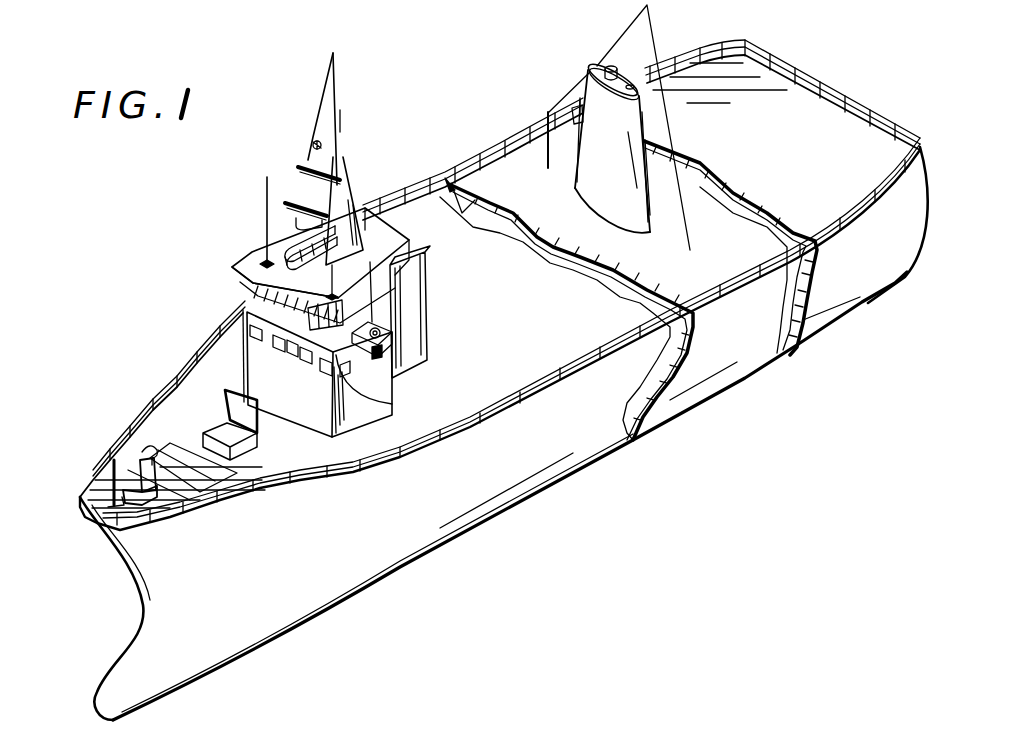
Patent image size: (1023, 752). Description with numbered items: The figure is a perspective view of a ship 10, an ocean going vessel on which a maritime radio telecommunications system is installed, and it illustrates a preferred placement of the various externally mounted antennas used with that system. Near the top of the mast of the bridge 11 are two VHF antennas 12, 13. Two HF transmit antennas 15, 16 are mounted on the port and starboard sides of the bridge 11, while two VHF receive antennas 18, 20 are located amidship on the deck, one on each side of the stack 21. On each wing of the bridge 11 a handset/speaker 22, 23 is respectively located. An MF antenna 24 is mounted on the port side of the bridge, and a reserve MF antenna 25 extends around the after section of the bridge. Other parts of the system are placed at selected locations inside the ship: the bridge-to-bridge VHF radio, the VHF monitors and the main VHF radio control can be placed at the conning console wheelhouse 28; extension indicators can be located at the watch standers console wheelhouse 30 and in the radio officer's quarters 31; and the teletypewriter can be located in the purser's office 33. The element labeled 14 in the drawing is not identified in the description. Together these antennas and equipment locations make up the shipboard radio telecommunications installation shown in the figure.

The ship 10 is at (950, 78).
The bridge 11 is at (212, 388).
The VHF antenna 12 is at (308, 168).
The VHF antenna 13 is at (340, 178).
The radar unit 14 is at (316, 150).
The HF transmit antenna 15 is at (330, 284).
The HF transmit antenna 16 is at (265, 243).
The VHF receive antenna 18 is at (690, 235).
The VHF receive antenna 20 is at (540, 172).
The stack 21 is at (598, 208).
The handset/speaker 22 is at (236, 267).
The handset/speaker 23 is at (345, 360).
The MF antenna 24 is at (427, 288).
The reserve MF antenna 25 is at (425, 228).
The conning console wheelhouse 28 is at (300, 318).
The watch standers console wheelhouse 30 is at (252, 290).
The radio officer's quarters 31 is at (402, 403).
The purser's office 33 is at (420, 358).